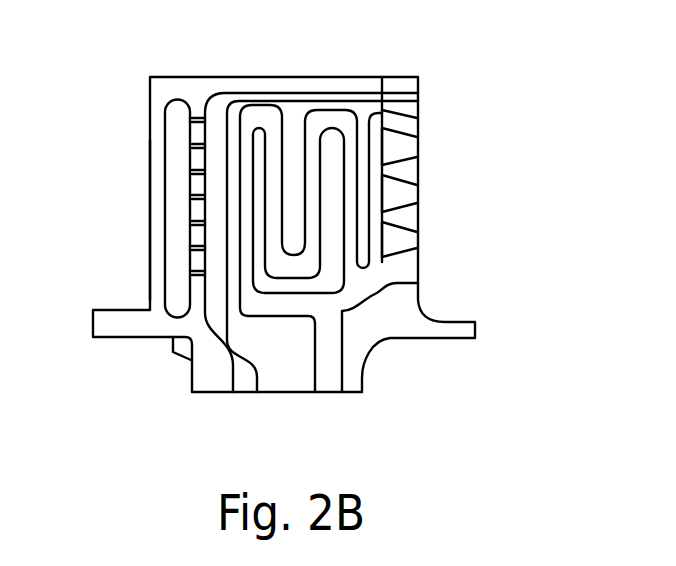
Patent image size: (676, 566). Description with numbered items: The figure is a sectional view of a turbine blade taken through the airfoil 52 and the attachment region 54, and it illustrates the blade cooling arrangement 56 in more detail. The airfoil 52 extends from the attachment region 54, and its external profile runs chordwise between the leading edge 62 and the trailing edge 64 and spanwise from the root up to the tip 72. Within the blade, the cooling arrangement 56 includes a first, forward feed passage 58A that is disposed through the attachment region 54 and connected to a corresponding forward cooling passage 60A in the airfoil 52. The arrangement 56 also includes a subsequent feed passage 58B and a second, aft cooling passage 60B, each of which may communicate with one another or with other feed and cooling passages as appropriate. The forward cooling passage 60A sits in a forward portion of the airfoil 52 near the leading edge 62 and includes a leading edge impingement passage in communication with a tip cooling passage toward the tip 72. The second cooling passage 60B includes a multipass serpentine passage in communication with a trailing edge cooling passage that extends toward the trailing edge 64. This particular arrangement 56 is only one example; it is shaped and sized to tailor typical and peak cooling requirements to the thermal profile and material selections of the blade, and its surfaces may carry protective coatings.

The airfoil 52 is at (148, 140).
The attachment region 54 is at (185, 367).
The blade cooling arrangement 56 is at (278, 348).
The first feed passage 58A is at (243, 378).
The subsequent feed passage 58B is at (323, 370).
The forward cooling passage 60A is at (196, 100).
The second cooling passage 60B is at (299, 146).
The leading edge 62 is at (120, 255).
The trailing edge 64 is at (487, 220).
The tip 72 is at (363, 77).